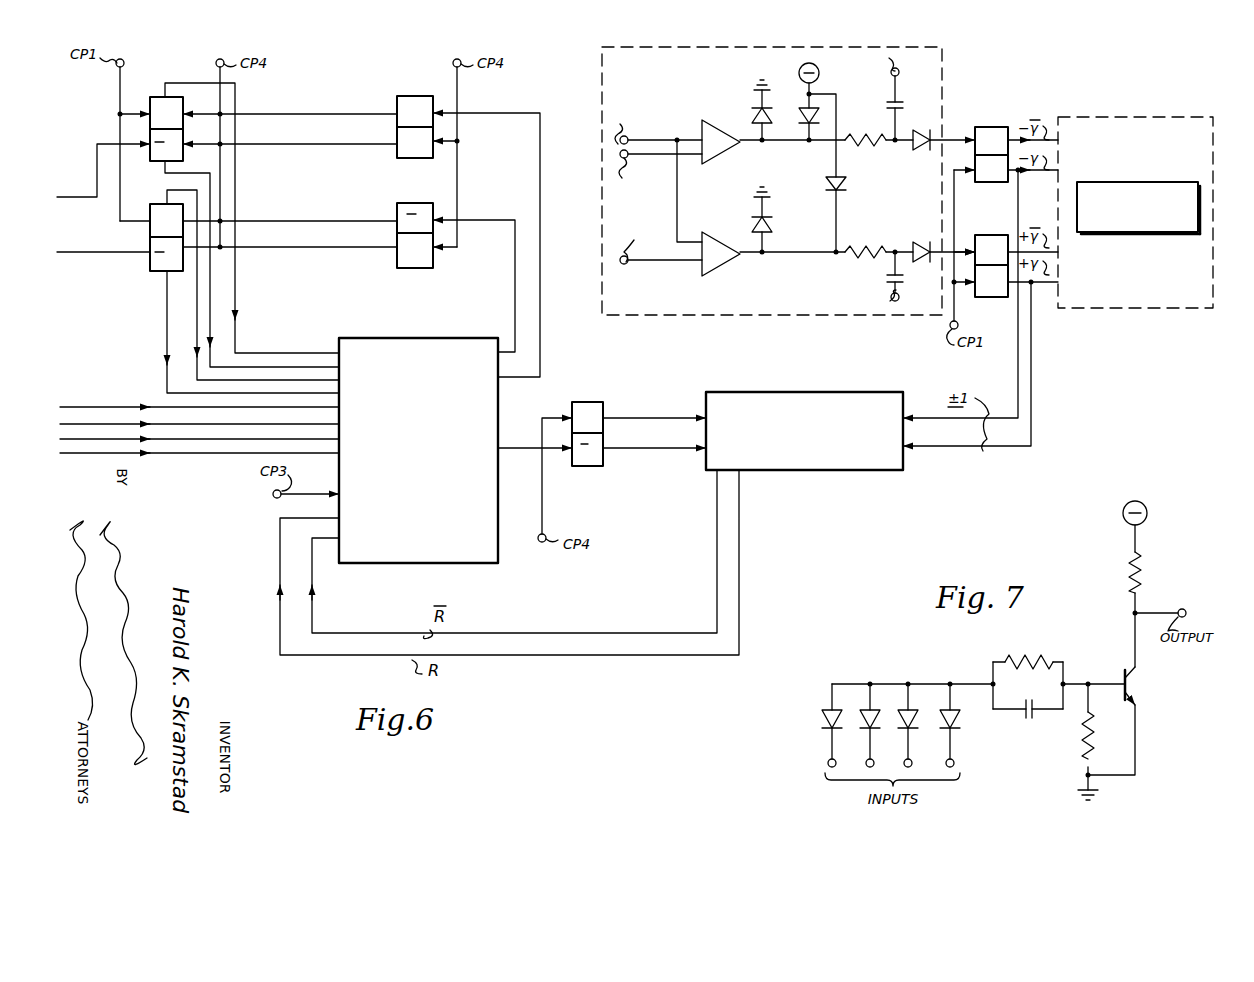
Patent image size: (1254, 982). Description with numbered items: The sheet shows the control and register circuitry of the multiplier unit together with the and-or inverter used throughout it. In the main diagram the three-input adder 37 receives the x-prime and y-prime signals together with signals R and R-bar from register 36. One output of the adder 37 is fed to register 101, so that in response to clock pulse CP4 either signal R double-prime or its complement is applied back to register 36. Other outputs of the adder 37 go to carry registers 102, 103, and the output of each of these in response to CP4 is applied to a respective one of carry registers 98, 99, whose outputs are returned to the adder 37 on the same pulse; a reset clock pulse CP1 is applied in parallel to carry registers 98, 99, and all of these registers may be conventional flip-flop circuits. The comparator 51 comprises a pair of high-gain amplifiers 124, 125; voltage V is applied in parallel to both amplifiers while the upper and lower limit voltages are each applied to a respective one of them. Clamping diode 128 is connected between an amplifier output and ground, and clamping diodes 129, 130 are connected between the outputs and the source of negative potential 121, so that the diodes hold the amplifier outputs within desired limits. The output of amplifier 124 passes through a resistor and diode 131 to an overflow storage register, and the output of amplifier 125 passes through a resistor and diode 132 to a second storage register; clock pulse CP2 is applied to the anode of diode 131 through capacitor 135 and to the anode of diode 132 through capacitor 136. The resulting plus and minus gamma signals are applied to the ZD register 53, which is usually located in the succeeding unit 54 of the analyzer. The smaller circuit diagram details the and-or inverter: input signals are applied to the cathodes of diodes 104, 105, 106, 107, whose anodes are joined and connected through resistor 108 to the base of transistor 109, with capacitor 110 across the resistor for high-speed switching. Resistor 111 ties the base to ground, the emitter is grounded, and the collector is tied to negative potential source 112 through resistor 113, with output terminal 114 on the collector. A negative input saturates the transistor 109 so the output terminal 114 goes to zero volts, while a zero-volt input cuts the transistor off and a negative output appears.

In FIG. 6, the carry register 98 is at (157, 275).
In FIG. 6, the carry register 99 is at (156, 97).
In FIG. 6, the carry register 102 is at (421, 268).
In FIG. 6, the carry register 103 is at (423, 96).
In FIG. 6, the register 101 is at (582, 466).
In FIG. 6, the three-input adder 37 is at (425, 563).
In FIG. 6, the register 36 is at (843, 470).
In FIG. 6, the comparator 51 is at (640, 315).
In FIG. 6, the ZD register 53 is at (1145, 232).
In FIG. 6, the succeeding unit 54 is at (1140, 96).
In FIG. 6, the negative potential source 112 is at (980, 182).
In FIG. 7, the negative potential source 112 is at (1165, 494).
In FIG. 6, the resistor 113 is at (980, 297).
In FIG. 7, the resistor 113 is at (1128, 581).
In FIG. 6, the source of negative potential 121 is at (800, 74).
In FIG. 6, the high-gain amplifier 124 is at (712, 160).
In FIG. 6, the high-gain amplifier 125 is at (722, 269).
In FIG. 6, the diode 107 is at (752, 118).
In FIG. 7, the diode 107 is at (954, 722).
In FIG. 6, the clamping diode 128 is at (772, 225).
In FIG. 6, the clamping diode 129 is at (805, 117).
In FIG. 6, the clamping diode 130 is at (826, 184).
In FIG. 6, the diode 131 is at (918, 146).
In FIG. 6, the diode 132 is at (920, 240).
In FIG. 6, the capacitor 135 is at (930, 86).
In FIG. 6, the capacitor 136 is at (889, 279).
In FIG. 7, the diode 104 is at (820, 721).
In FIG. 7, the diode 105 is at (864, 720).
In FIG. 7, the diode 106 is at (914, 722).
In FIG. 7, the resistor 108 is at (1021, 663).
In FIG. 7, the transistor 109 is at (1186, 686).
In FIG. 7, the capacitor 110 is at (1022, 712).
In FIG. 7, the resistor 111 is at (1121, 736).
In FIG. 7, the output terminal 114 is at (1198, 594).